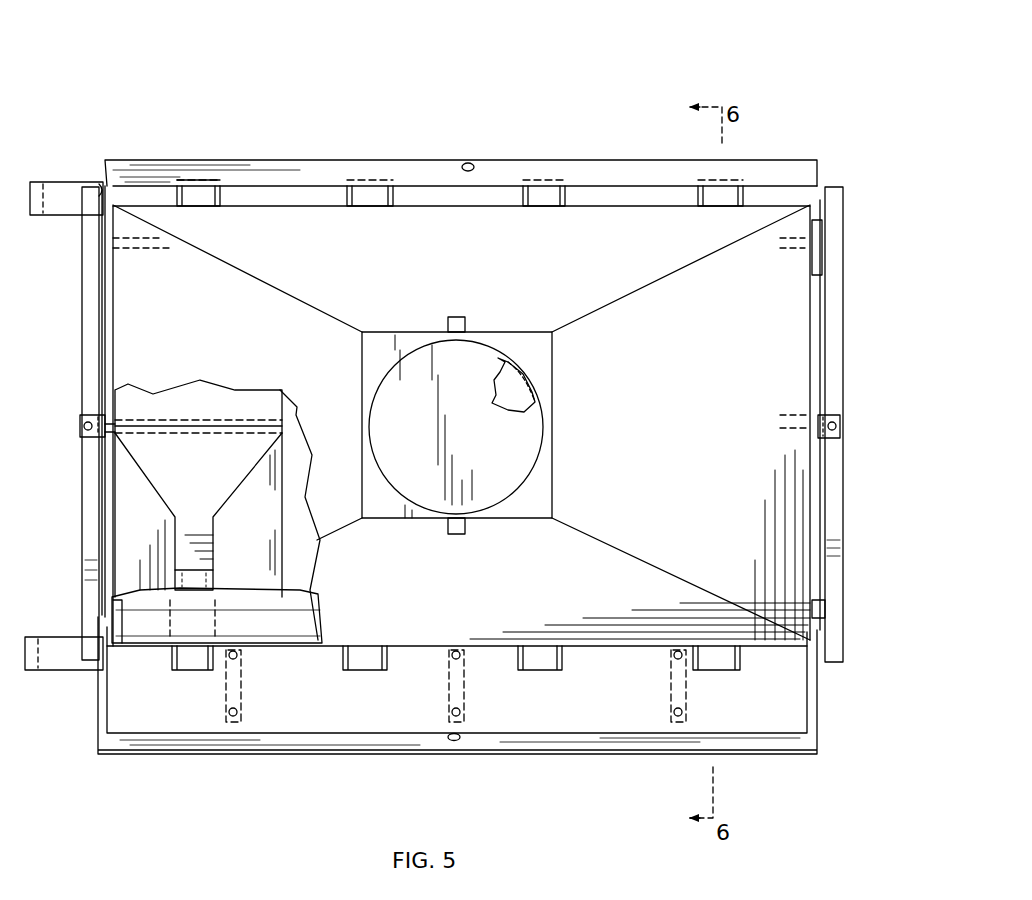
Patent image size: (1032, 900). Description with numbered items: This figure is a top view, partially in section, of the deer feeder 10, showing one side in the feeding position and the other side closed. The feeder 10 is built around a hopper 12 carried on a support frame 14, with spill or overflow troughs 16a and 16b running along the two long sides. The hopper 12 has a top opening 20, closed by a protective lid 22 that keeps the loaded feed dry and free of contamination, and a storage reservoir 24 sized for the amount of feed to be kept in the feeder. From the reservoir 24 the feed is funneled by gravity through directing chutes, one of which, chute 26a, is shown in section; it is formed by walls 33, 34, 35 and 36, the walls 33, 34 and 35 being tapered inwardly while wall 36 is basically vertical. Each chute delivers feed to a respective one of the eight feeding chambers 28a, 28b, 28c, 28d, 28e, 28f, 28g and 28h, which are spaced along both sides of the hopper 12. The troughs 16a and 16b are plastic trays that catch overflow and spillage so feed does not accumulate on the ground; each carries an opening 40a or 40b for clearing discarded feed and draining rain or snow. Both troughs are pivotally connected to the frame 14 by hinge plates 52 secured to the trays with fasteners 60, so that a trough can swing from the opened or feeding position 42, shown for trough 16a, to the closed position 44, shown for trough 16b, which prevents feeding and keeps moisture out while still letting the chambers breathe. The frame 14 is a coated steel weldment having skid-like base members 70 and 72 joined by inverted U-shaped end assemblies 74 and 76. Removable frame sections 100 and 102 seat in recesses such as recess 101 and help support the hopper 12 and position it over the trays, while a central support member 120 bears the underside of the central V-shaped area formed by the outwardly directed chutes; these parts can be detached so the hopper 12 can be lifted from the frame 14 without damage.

The deer feeder 10 is at (620, 72).
The hopper 12 is at (827, 328).
The support frame 14 is at (845, 372).
The spill trough 16a is at (780, 757).
The spill trough 16b is at (783, 160).
The top opening 20 is at (510, 393).
The protective lid 22 is at (528, 454).
The storage reservoir 24 is at (765, 484).
The feed directing chute 26a is at (135, 569).
The feeding chamber 28a is at (168, 662).
The feeding chamber 28b is at (366, 660).
The feeding chamber 28c is at (543, 663).
The feeding chamber 28d is at (713, 656).
The feeding chamber 28e is at (200, 200).
The feeding chamber 28f is at (372, 196).
The feeding chamber 28g is at (540, 196).
The feeding chamber 28h is at (715, 197).
The wall 33 is at (135, 518).
The wall 34 is at (255, 518).
The wall 35 is at (190, 453).
The wall 36 is at (225, 588).
The opening 40a is at (450, 741).
The opening 40b is at (466, 163).
The opened or feeding position 42 is at (830, 730).
The closed position 44 is at (493, 152).
The hinge plate 52 is at (241, 690).
The fastener 60 is at (232, 716).
The base member 70 is at (52, 663).
The base member 72 is at (62, 183).
The end assembly 74 is at (88, 318).
The end assembly 76 is at (832, 522).
The removable frame section 100 is at (825, 605).
The recess 101 is at (280, 620).
The removable frame section 102 is at (796, 255).
The central support member 120 is at (103, 437).